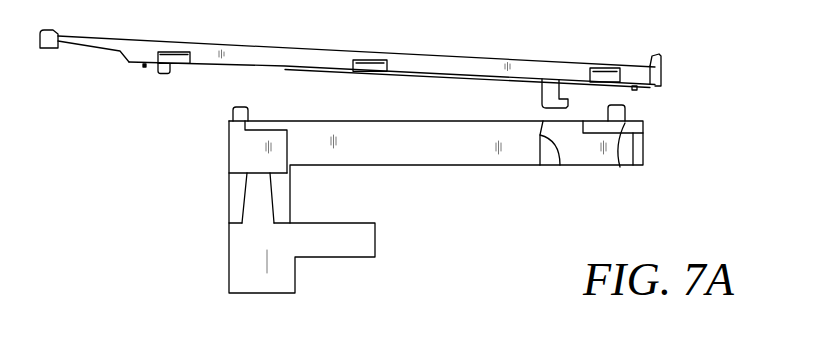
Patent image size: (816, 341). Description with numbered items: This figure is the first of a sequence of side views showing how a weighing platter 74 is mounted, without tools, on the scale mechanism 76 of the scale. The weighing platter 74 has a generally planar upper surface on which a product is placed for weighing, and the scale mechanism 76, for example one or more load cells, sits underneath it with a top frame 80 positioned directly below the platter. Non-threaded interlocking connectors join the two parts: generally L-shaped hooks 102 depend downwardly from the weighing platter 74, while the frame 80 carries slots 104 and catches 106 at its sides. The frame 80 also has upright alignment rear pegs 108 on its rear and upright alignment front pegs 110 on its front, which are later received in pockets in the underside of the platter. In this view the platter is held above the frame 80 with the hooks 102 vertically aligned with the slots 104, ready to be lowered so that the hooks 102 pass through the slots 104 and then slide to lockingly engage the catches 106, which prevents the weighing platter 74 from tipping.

The weighing platter 74 is at (458, 55).
The scale mechanism 76 is at (237, 264).
The top frame 80 is at (406, 155).
The hooks 102 is at (541, 91).
The slots 104 is at (560, 165).
The catches 106 is at (620, 167).
The rear pegs 108 is at (627, 111).
The front pegs 110 is at (232, 110).